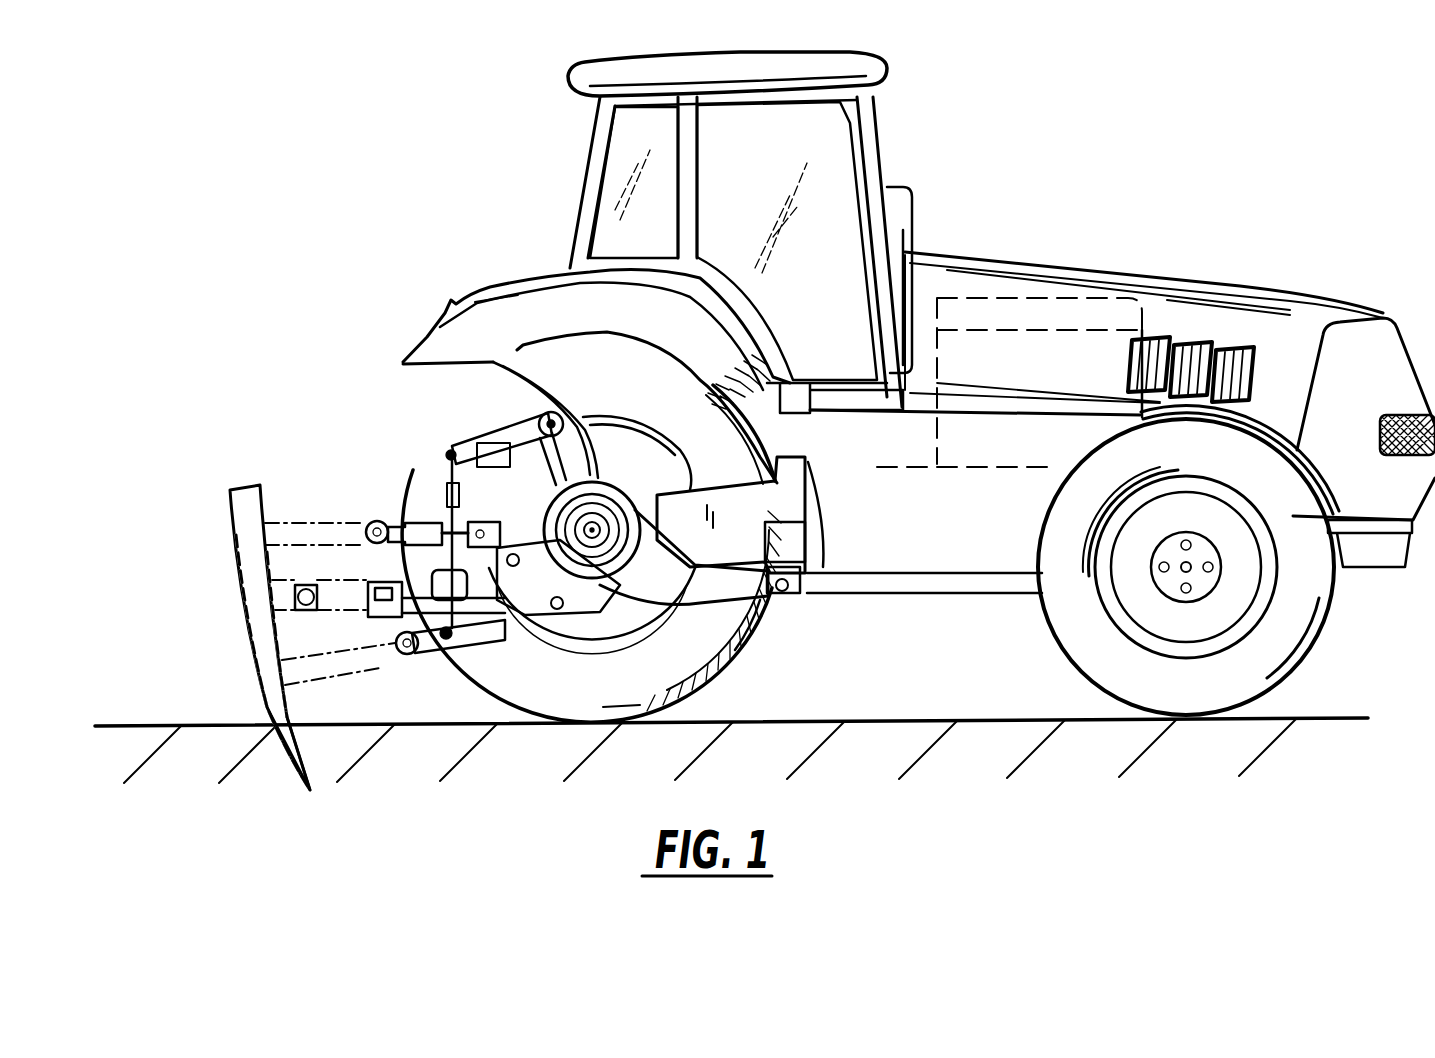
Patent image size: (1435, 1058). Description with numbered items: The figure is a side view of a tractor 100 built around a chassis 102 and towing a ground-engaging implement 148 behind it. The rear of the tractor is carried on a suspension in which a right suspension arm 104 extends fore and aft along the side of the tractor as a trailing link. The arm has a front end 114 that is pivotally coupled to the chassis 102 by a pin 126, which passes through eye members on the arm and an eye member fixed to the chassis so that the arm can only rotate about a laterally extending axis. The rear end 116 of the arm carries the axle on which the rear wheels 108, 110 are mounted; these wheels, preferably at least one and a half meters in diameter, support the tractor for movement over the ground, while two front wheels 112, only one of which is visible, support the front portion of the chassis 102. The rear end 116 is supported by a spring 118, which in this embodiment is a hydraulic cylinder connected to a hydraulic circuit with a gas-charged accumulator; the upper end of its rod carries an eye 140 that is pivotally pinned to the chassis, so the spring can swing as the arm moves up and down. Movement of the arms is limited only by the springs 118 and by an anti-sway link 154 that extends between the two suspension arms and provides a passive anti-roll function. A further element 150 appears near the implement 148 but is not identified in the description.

The tractor 100 is at (996, 186).
The chassis 102 is at (820, 552).
The right suspension arm 104 is at (650, 585).
The rear wheel 108 is at (557, 355).
The rear wheel 110 is at (553, 703).
The front wheel 112 is at (1320, 636).
The front end 114 is at (748, 598).
The rear end 116 is at (523, 580).
The spring 118 is at (458, 452).
The pin 126 is at (800, 598).
The eye 140 is at (538, 420).
The implement 148 is at (241, 480).
The blade cutting edge 150 is at (303, 780).
The anti-sway link 154 is at (745, 603).